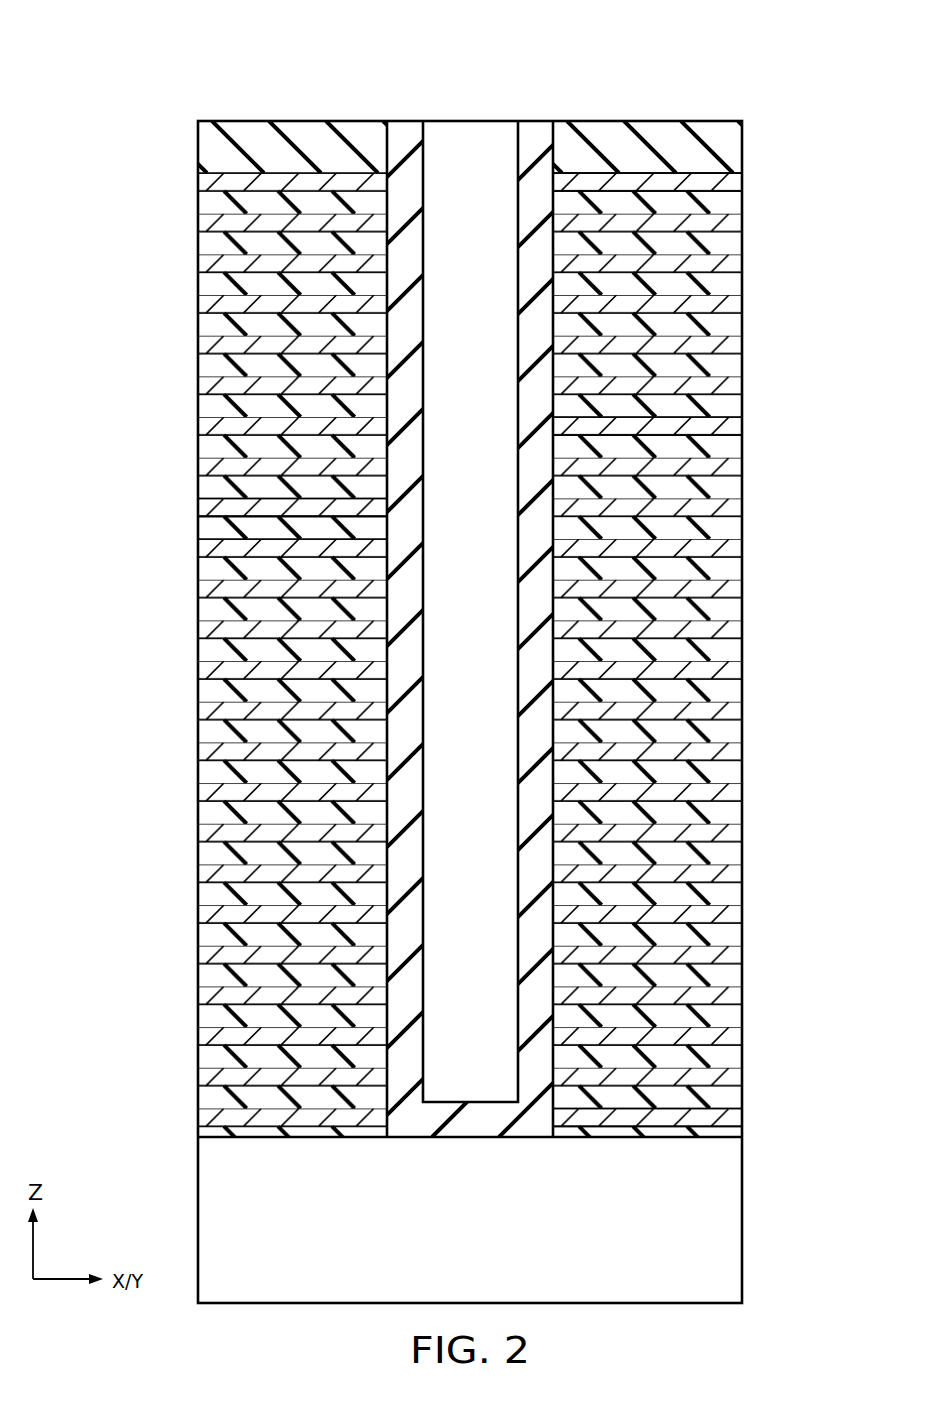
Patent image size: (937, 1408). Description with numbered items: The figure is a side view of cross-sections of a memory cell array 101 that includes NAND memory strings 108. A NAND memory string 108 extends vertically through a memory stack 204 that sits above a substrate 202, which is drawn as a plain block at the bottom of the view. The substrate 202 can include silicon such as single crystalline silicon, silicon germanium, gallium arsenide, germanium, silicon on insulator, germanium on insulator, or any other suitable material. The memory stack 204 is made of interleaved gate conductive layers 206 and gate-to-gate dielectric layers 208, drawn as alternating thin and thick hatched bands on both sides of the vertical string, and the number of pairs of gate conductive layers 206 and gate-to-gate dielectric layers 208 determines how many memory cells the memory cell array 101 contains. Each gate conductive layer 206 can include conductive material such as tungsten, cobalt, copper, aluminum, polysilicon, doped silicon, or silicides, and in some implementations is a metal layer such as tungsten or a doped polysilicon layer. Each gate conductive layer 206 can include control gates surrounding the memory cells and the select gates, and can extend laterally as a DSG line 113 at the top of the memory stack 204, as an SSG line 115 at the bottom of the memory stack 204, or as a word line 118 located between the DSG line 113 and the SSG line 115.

The memory cell array 101 is at (74, 56).
The NAND memory string 108 is at (645, 98).
The DSG line 113 is at (732, 182).
The word line 118 is at (732, 425).
The SSG line 115 is at (733, 1118).
The substrate 202 is at (493, 1237).
The memory stack 204 is at (113, 174).
The gate conductive layer 206 is at (200, 508).
The gate-to-gate dielectric layer 208 is at (200, 530).